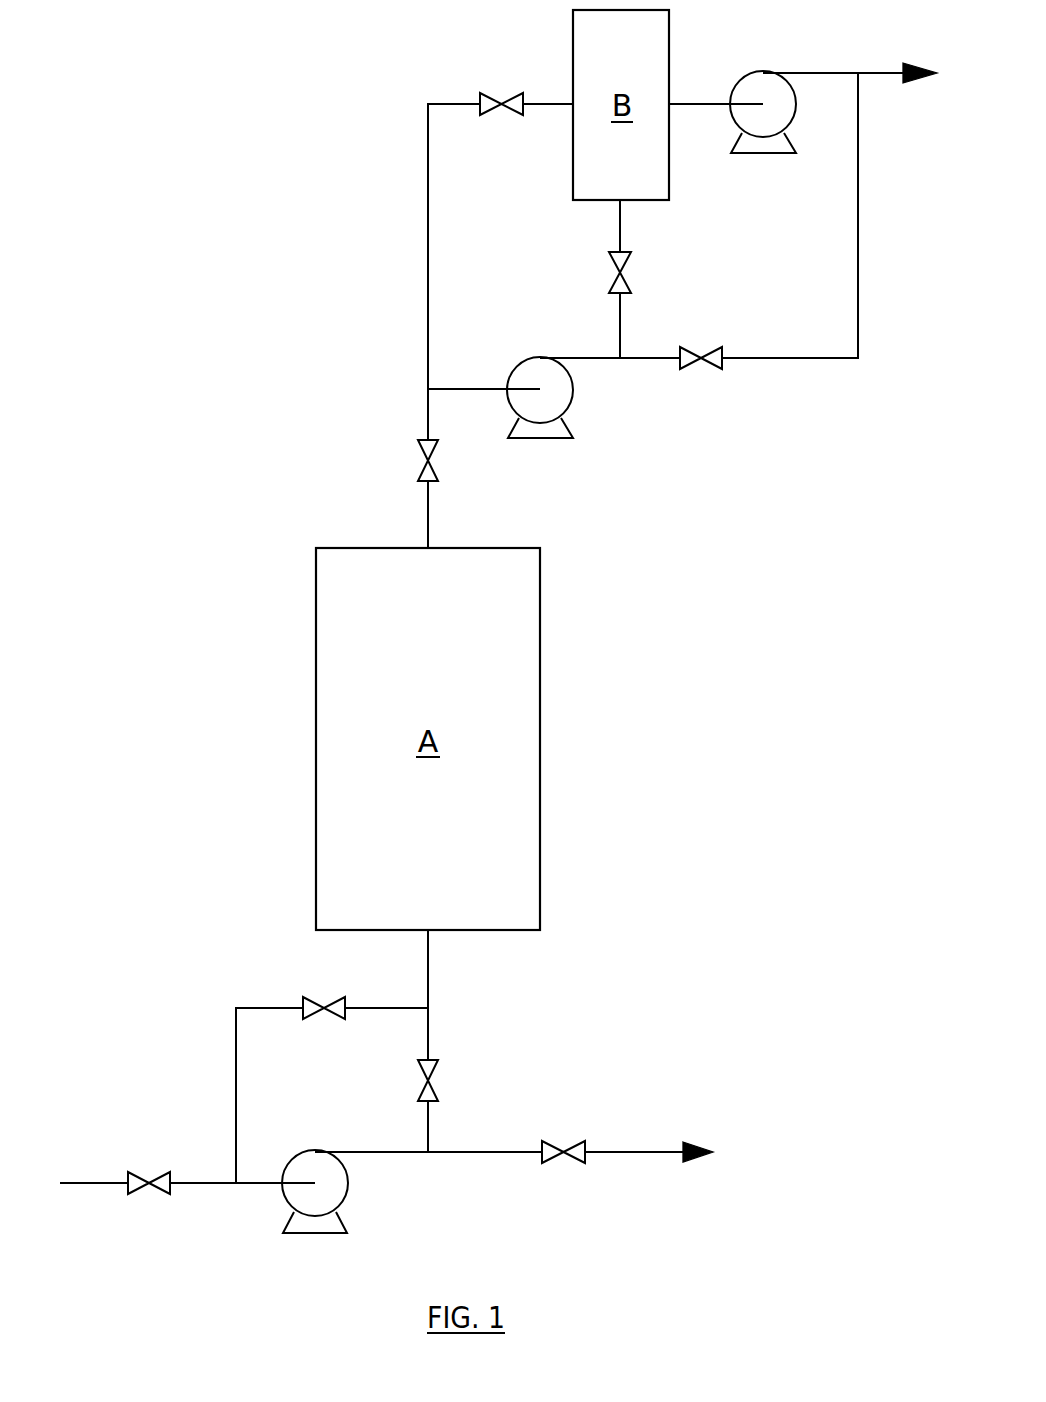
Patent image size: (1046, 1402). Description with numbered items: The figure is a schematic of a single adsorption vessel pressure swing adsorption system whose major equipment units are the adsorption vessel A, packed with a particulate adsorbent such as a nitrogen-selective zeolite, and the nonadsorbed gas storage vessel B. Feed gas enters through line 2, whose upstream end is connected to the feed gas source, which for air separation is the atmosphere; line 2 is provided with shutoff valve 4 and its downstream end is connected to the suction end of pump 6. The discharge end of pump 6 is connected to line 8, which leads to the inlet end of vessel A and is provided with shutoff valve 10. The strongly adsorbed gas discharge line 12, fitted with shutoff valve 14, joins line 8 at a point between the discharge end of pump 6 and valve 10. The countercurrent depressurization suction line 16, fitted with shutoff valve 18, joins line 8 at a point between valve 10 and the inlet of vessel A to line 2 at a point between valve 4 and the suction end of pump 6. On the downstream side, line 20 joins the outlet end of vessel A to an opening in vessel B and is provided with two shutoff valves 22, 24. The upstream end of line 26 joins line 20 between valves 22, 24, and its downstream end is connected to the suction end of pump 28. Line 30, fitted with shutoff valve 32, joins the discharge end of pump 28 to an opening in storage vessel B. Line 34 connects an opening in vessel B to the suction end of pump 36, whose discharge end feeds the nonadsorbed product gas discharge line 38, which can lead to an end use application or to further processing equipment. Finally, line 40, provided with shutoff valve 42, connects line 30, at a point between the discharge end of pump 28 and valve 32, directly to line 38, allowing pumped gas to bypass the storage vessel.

The line 2 is at (95, 1185).
The shutoff valve 4 is at (165, 1173).
The pump 6 is at (300, 1233).
The line 8 is at (380, 1150).
The shutoff valve 10 is at (435, 1072).
The strongly adsorbed gas discharge line 12 is at (468, 1155).
The shutoff valve 14 is at (553, 1145).
The countercurrent depressurization suction line 16 is at (232, 1047).
The shutoff valve 18 is at (335, 1003).
The line 20 is at (425, 301).
The shutoff valve 22 is at (420, 450).
The shutoff valve 24 is at (505, 100).
The line 26 is at (464, 388).
The pump 28 is at (540, 439).
The line 30 is at (618, 231).
The shutoff valve 32 is at (628, 261).
The line 34 is at (680, 100).
The pump 36 is at (757, 154).
The nonadsorbed product gas discharge line 38 is at (802, 70).
The line 40 is at (637, 360).
The shutoff valve 42 is at (693, 348).